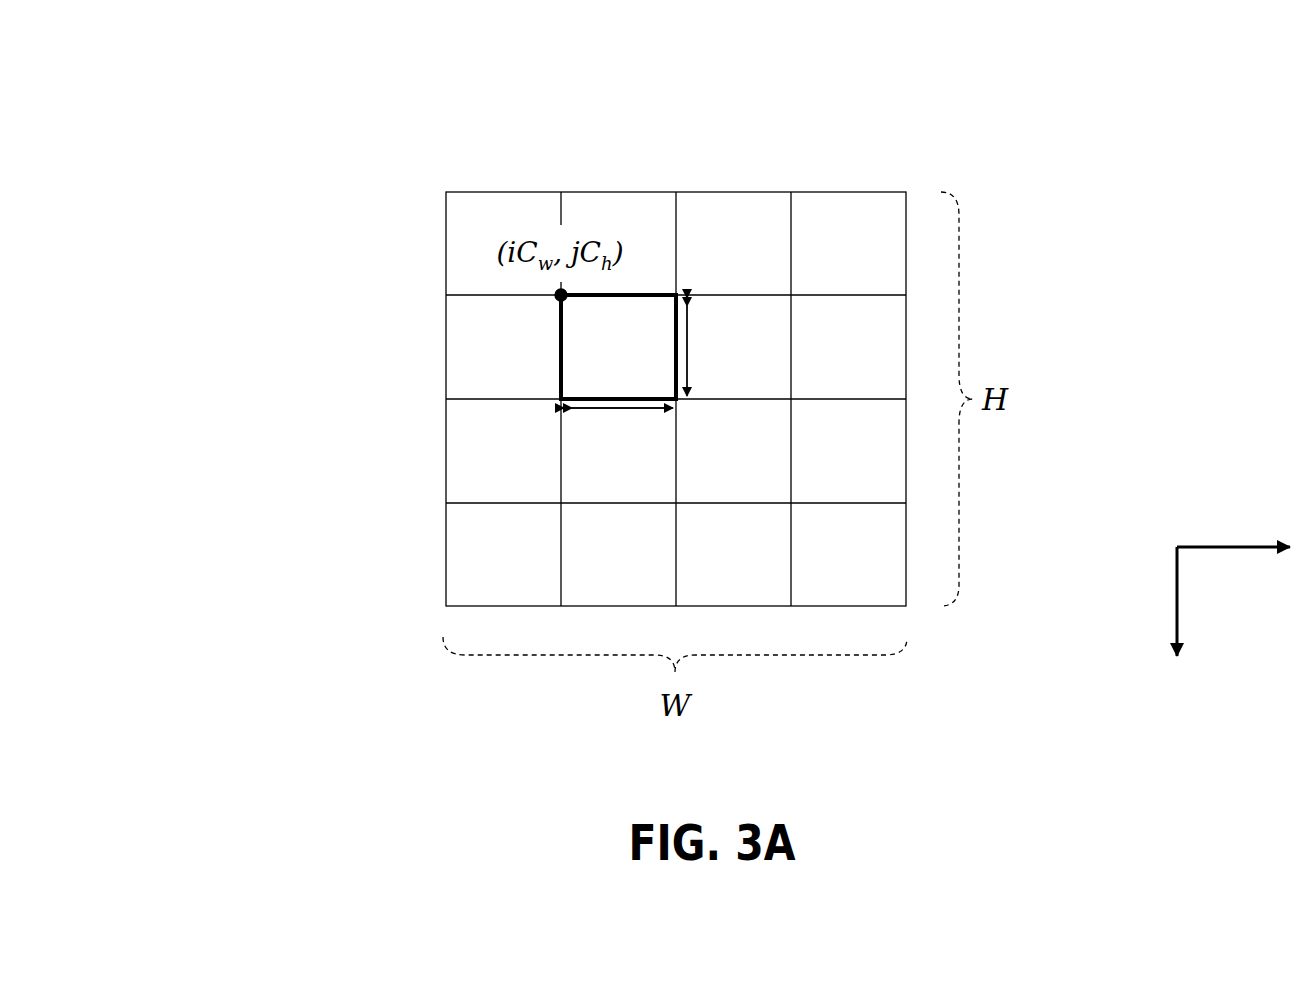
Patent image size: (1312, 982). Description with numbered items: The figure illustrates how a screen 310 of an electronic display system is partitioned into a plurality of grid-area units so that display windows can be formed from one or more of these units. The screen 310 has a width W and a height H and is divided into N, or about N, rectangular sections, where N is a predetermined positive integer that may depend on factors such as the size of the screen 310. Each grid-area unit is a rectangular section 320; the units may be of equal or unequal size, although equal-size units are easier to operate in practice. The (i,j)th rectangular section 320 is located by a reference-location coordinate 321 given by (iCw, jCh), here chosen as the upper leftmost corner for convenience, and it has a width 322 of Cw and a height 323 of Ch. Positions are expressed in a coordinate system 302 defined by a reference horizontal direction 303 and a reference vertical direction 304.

The screen 310 is at (1050, 110).
The rectangular section 320 is at (590, 332).
The reference-location coordinate 321 is at (556, 294).
The width 322 is at (593, 410).
The height 323 is at (690, 313).
The coordinate system 302 is at (1198, 562).
The reference horizontal direction 303 is at (1214, 547).
The reference vertical direction 304 is at (1177, 593).